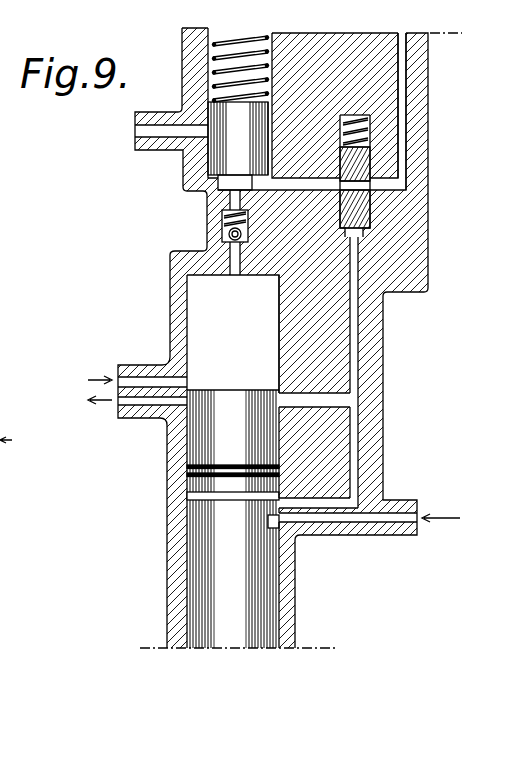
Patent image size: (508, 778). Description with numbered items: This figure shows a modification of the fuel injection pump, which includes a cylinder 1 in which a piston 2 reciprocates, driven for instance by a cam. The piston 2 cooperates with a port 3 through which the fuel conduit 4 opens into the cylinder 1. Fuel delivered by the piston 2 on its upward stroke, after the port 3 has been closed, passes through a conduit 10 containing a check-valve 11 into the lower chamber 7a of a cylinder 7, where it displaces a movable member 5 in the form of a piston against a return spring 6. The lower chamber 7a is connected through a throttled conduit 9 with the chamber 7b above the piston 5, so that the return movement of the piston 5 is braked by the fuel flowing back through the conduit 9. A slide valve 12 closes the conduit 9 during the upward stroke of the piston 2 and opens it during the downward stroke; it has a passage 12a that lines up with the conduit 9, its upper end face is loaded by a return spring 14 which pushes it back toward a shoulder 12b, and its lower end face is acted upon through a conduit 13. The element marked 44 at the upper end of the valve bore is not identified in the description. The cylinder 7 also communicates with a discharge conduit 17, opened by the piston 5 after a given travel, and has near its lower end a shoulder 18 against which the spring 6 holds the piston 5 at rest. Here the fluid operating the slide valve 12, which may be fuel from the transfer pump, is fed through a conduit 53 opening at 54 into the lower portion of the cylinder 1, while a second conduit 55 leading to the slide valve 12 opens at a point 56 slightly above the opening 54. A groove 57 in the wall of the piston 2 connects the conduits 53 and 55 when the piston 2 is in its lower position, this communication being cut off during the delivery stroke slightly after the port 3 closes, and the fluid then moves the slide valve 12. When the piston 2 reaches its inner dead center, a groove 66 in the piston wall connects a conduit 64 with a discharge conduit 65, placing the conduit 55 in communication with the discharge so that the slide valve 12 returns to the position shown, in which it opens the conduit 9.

The cylinder 1 is at (189, 289).
The piston 2 is at (233, 400).
The port 3 is at (190, 390).
The fuel conduit 4 is at (148, 386).
The movable member 5 is at (208, 153).
The return spring 6 is at (214, 44).
The cylinder 7 is at (212, 165).
The lower chamber 7a is at (226, 183).
The chamber 7b is at (214, 71).
The conduit 9 is at (407, 65).
The conduit 10 is at (226, 258).
The check-valve 11 is at (228, 233).
The slide valve 12 is at (370, 166).
The passage 12a is at (358, 186).
The shoulder 12b is at (364, 232).
The conduit 13 is at (355, 122).
The return spring 14 is at (352, 146).
The discharge conduit 17 is at (155, 130).
The shoulder 18 is at (232, 195).
The valve seat 44 is at (356, 133).
The conduit 53 is at (370, 517).
The opening 54 is at (274, 518).
The second conduit 55 is at (356, 458).
The point 56 is at (315, 502).
The groove 57 is at (194, 507).
The conduit 64 is at (328, 405).
The discharge conduit 65 is at (150, 400).
The groove 66 is at (194, 470).